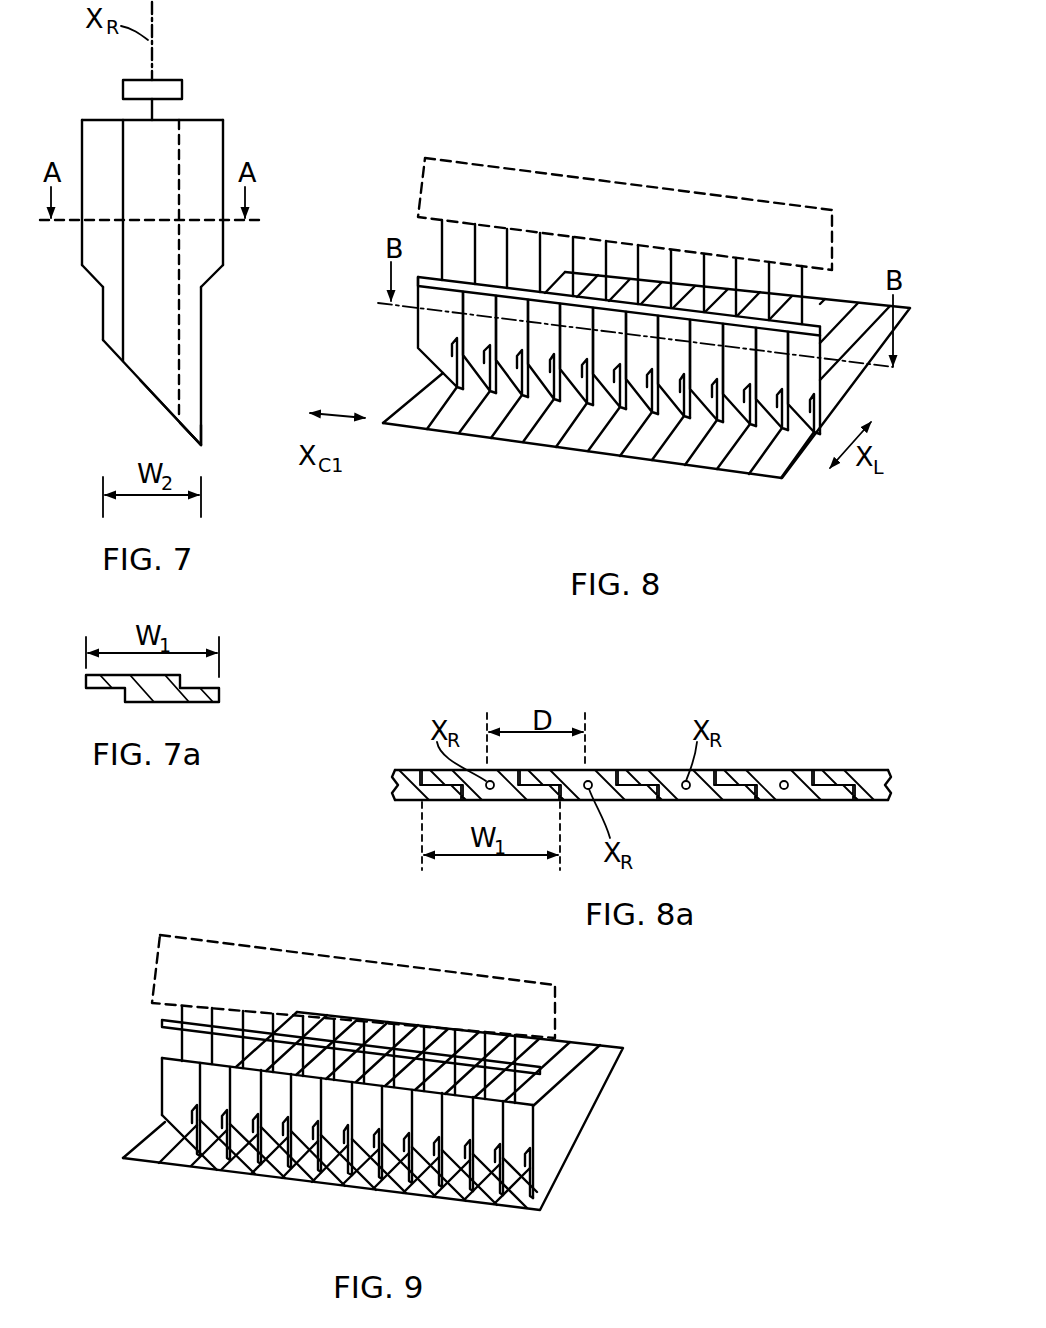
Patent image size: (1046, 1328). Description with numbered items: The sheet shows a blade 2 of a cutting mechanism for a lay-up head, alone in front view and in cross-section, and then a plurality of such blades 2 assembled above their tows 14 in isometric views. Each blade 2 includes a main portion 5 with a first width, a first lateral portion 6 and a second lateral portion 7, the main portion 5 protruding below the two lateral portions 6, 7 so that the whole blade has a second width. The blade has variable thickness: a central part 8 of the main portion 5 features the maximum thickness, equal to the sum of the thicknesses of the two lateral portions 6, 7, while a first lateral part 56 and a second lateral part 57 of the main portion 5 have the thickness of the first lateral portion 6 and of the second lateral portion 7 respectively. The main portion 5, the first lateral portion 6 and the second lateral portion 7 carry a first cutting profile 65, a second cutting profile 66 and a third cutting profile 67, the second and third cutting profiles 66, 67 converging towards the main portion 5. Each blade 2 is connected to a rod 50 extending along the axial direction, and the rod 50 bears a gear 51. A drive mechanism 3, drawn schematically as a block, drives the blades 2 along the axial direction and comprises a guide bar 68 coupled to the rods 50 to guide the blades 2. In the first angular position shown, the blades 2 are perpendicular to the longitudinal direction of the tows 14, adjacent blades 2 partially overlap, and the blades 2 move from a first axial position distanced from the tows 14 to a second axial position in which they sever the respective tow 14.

In FIG. 8, the blade 2 is at (500, 400).
In FIG. 9, the blade 2 is at (247, 1123).
In FIG. 8, the drive mechanism 3 is at (530, 190).
In FIG. 9, the drive mechanism 3 is at (223, 970).
In FIG. 7, the main portion 5 is at (150, 423).
In FIG. 7, the first lateral portion 6 is at (60, 246).
In FIG. 7, the second lateral portion 7 is at (237, 249).
In FIG. 7, the central part 8 is at (150, 385).
In FIG. 8, the tow 14 is at (425, 430).
In FIG. 9, the tow 14 is at (555, 1113).
In FIG. 7, the rod 50 is at (156, 109).
In FIG. 8, the rod 50 is at (442, 255).
In FIG. 7, the gear 51 is at (171, 80).
In FIG. 7, the first lateral part 56 is at (108, 322).
In FIG. 7, the second lateral part 57 is at (190, 367).
In FIG. 7, the first cutting profile 65 is at (123, 365).
In FIG. 7, the second cutting profile 66 is at (90, 274).
In FIG. 7, the third cutting profile 67 is at (212, 275).
In FIG. 8, the guide bar 68 is at (818, 320).
In FIG. 9, the guide bar 68 is at (162, 1020).